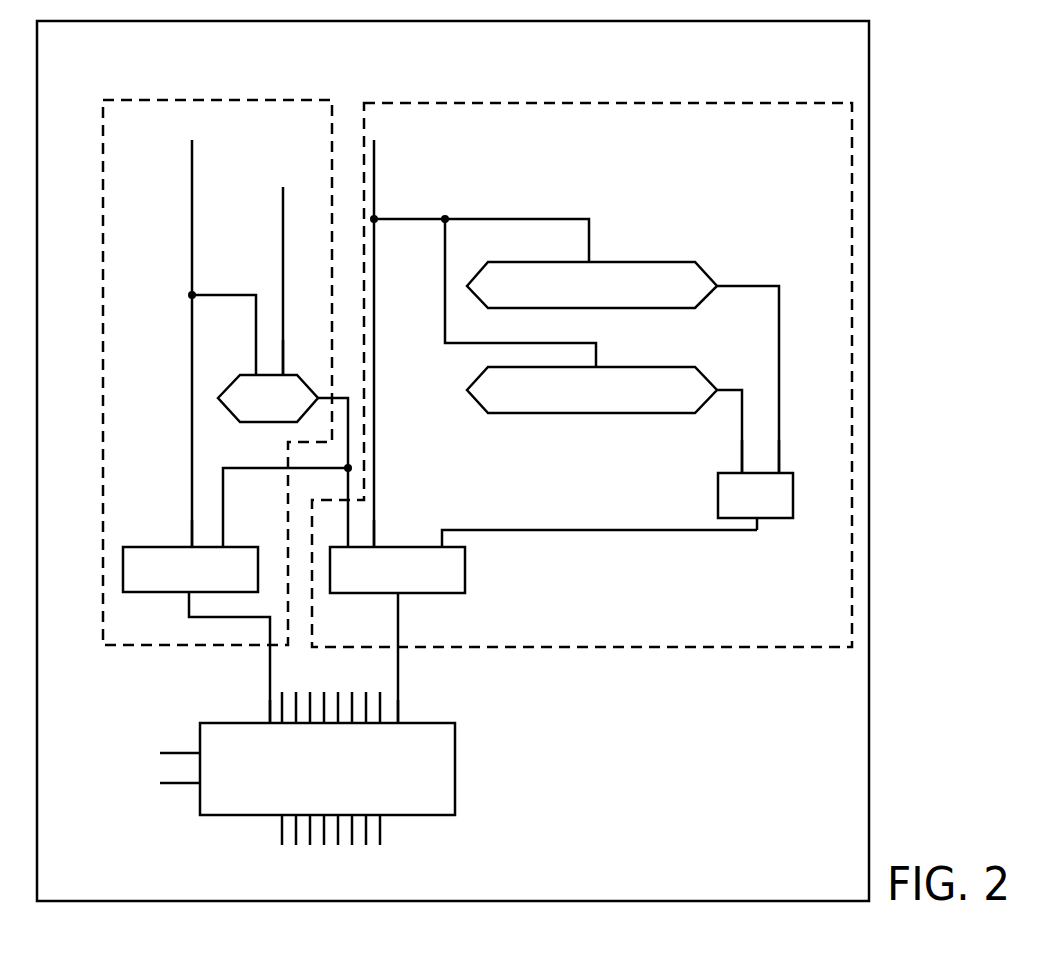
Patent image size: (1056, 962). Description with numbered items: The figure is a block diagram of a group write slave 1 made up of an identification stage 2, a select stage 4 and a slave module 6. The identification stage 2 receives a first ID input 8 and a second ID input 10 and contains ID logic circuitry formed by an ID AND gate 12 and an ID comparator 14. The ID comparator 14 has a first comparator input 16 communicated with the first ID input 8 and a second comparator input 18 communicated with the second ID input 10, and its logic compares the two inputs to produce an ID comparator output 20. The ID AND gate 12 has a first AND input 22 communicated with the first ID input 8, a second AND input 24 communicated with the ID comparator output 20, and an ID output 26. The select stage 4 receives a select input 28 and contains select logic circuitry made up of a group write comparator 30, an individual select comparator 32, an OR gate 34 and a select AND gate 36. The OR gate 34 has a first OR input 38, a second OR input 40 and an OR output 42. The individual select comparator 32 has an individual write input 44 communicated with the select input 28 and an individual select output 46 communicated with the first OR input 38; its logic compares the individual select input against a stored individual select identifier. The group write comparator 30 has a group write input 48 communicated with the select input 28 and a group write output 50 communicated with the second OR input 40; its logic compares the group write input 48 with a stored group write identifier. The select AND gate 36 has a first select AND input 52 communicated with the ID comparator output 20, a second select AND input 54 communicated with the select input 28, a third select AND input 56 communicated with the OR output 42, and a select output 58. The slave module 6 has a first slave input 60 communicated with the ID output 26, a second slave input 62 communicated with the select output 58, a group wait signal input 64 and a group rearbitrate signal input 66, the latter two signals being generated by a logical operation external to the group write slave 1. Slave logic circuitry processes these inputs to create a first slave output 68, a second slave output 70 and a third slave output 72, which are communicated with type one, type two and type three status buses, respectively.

The group write slave 1 is at (877, 115).
The identification stage 2 is at (246, 100).
The select stage 4 is at (514, 102).
The slave module 6 is at (455, 790).
The first ID input 8 is at (192, 173).
The second ID input 10 is at (283, 213).
The ID AND gate 12 is at (138, 547).
The ID comparator 14 is at (230, 392).
The first comparator input 16 is at (256, 372).
The second comparator input 18 is at (283, 373).
The ID comparator output 20 is at (320, 410).
The first AND input 22 is at (191, 546).
The second AND input 24 is at (223, 546).
The ID output 26 is at (187, 595).
The select input 28 is at (375, 153).
The group write comparator 30 is at (657, 262).
The individual select comparator 32 is at (684, 367).
The OR gate 34 is at (793, 505).
The select AND gate 36 is at (465, 570).
The first OR input 38 is at (742, 473).
The second OR input 40 is at (778, 473).
The OR output 42 is at (760, 520).
The individual write input 44 is at (597, 365).
The individual select output 46 is at (718, 390).
The group write input 48 is at (590, 260).
The group write output 50 is at (718, 287).
The first select AND input 52 is at (348, 547).
The second select AND input 54 is at (373, 547).
The third select AND input 56 is at (440, 547).
The select output 58 is at (399, 594).
The first slave input 60 is at (268, 722).
The second slave input 62 is at (400, 722).
The group wait signal input 64 is at (178, 753).
The group rearbitrate signal input 66 is at (178, 783).
The first slave output 68 is at (282, 836).
The second slave output 70 is at (337, 832).
The third slave output 72 is at (380, 832).